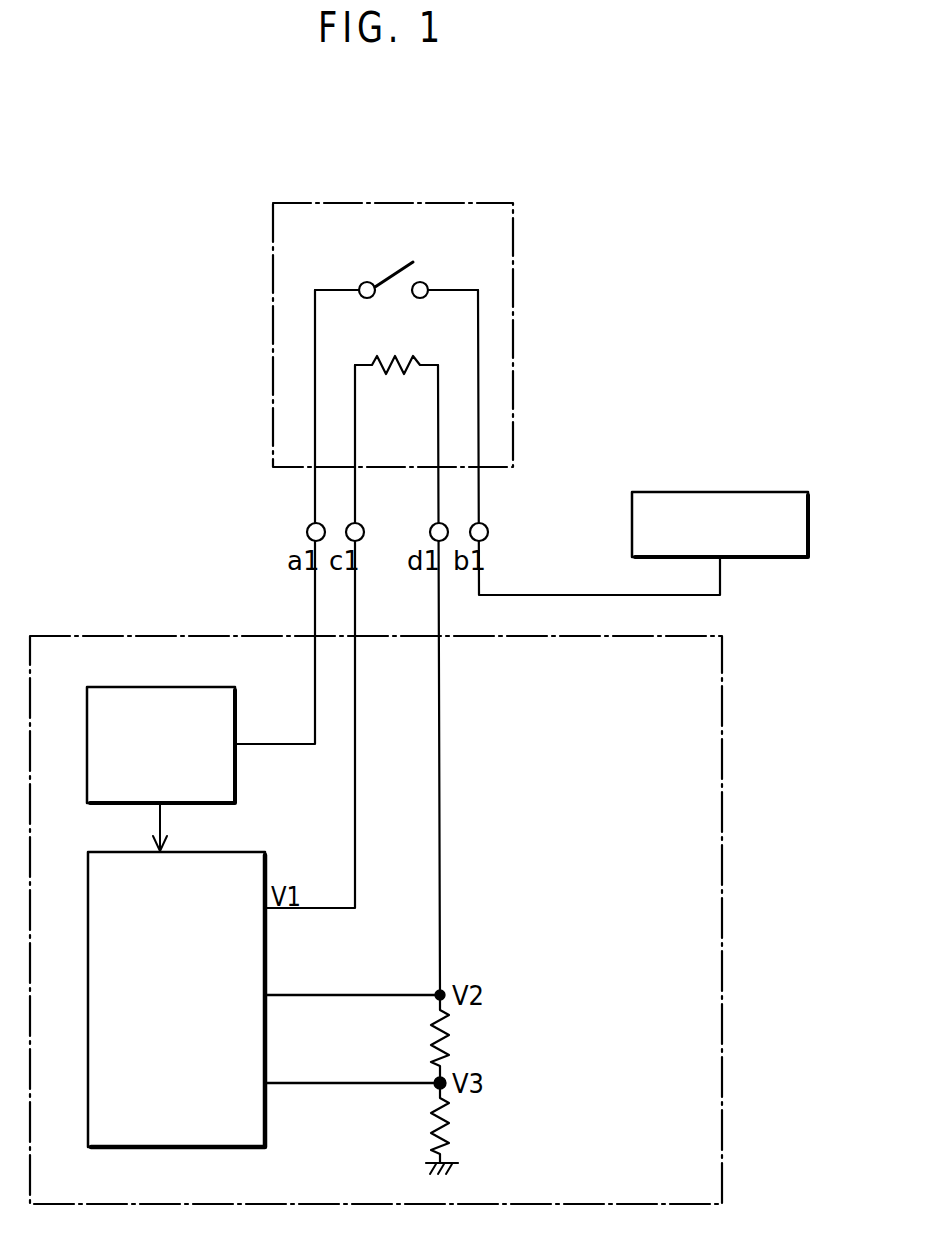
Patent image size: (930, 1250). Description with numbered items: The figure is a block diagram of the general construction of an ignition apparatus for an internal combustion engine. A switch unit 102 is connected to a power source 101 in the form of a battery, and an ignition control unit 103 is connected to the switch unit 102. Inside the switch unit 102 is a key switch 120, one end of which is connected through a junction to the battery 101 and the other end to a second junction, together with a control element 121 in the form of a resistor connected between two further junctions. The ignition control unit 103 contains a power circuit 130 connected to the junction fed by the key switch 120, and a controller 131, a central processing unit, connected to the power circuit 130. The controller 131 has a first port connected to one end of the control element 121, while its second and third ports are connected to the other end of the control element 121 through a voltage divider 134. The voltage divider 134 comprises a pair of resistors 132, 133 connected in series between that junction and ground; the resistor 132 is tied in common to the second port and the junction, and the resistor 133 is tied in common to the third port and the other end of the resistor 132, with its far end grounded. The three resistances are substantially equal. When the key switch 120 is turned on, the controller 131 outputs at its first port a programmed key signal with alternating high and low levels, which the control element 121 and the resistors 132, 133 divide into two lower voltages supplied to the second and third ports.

The power source 101 is at (701, 492).
The switch unit 102 is at (438, 206).
The ignition control unit 103 is at (723, 780).
The key switch 120 is at (378, 279).
The control element 121 is at (397, 372).
The power circuit 130 is at (138, 687).
The controller 131 is at (136, 852).
The resistor 132 is at (433, 1034).
The resistor 133 is at (435, 1119).
The voltage divider 134 is at (500, 1084).